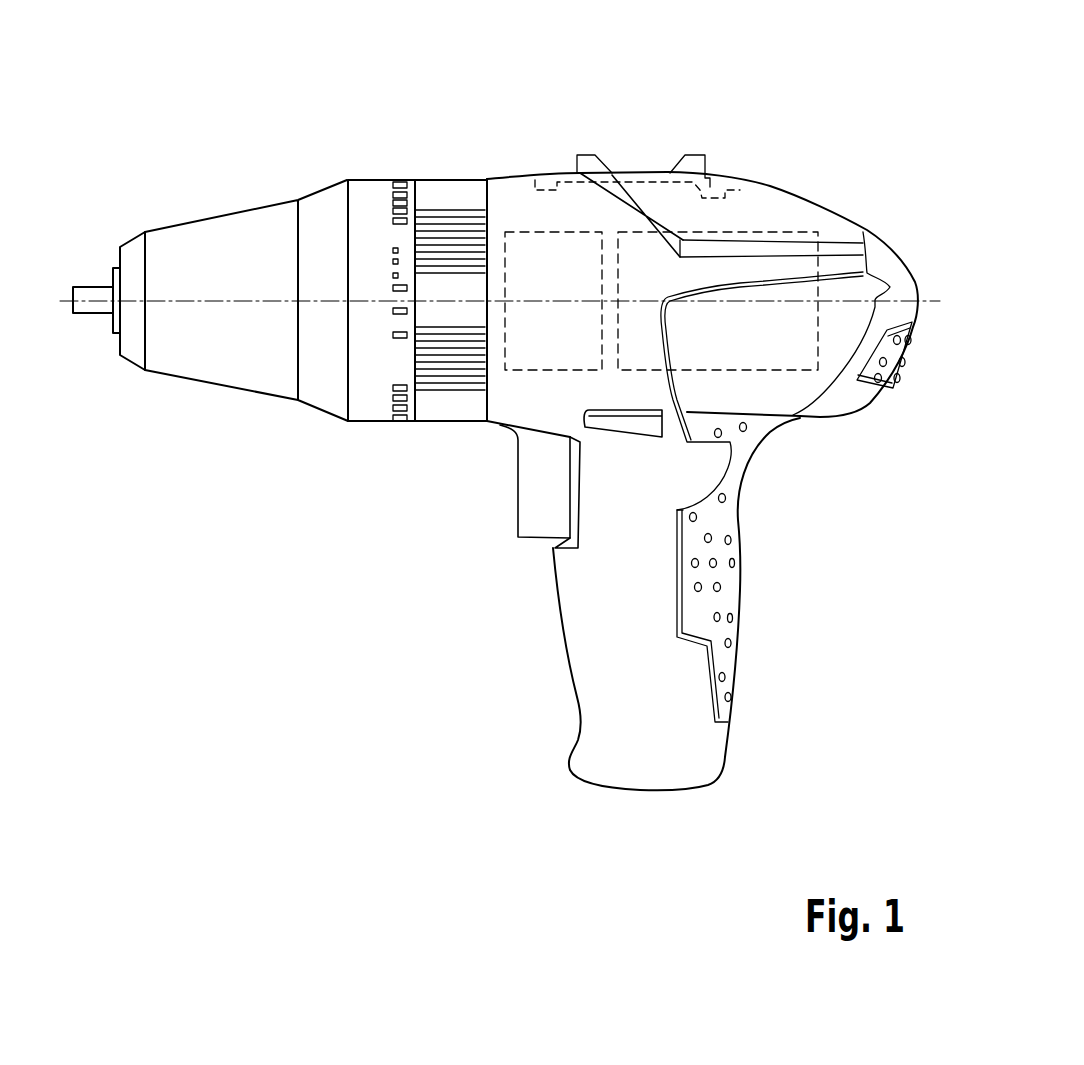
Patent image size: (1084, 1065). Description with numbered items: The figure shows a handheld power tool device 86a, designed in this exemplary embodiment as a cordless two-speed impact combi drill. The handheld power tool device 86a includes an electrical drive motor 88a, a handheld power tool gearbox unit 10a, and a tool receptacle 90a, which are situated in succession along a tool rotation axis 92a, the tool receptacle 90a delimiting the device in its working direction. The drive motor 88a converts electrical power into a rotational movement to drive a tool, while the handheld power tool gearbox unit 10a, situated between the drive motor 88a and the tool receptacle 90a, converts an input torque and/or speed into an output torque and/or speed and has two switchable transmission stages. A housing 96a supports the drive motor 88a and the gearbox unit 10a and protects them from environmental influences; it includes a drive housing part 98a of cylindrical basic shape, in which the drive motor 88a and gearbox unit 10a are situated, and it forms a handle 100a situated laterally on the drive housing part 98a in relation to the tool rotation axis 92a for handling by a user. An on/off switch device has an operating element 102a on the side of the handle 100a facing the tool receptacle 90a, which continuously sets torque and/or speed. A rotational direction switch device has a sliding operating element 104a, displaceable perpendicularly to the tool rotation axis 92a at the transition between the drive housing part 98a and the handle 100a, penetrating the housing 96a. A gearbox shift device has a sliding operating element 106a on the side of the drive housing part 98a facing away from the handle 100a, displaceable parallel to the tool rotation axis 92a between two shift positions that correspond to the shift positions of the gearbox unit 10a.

The handheld power tool device 86a is at (832, 72).
The electrical drive motor 88a is at (781, 232).
The tool receptacle 90a is at (110, 217).
The tool rotation axis 92a is at (233, 298).
The housing 96a is at (733, 143).
The drive housing part 98a is at (872, 428).
The handle 100a is at (757, 592).
The operating element 102a is at (535, 492).
The sliding operating element 104a is at (613, 425).
The sliding operating element 106a is at (695, 163).
The handheld power tool gearbox unit 10a is at (526, 232).